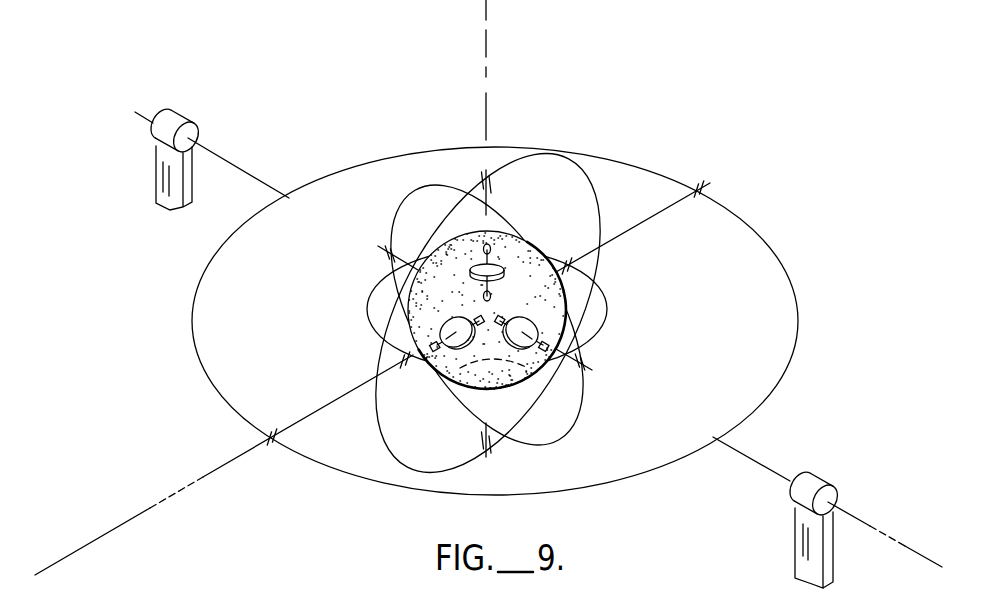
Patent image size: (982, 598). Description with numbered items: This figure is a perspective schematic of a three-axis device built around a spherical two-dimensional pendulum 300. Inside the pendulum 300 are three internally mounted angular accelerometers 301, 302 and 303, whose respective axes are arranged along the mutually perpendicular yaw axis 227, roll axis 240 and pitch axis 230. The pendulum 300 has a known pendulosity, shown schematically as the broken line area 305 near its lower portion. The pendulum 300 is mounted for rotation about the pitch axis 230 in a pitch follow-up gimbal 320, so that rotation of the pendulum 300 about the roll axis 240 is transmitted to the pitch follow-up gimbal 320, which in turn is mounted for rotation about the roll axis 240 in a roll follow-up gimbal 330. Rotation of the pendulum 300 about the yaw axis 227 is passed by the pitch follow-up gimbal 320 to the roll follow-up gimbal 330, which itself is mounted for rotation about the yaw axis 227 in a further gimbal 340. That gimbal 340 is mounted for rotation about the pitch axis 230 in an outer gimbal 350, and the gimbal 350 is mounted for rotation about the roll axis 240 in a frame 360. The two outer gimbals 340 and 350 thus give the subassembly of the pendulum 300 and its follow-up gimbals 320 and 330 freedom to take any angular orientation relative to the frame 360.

The yaw axis 227 is at (488, 29).
The pitch axis 230 is at (204, 480).
The roll axis 240 is at (925, 562).
The spherical pendulum 300 is at (530, 246).
The angular accelerometer 301 is at (498, 280).
The angular accelerometer 302 is at (433, 288).
The angular accelerometer 303 is at (546, 313).
The broken line area 305 is at (484, 382).
The pitch follow-up gimbal 320 is at (609, 309).
The roll follow-up gimbal 330 is at (575, 428).
The gimbal 340 is at (379, 432).
The gimbal 350 is at (197, 366).
The frame 360 is at (818, 484).